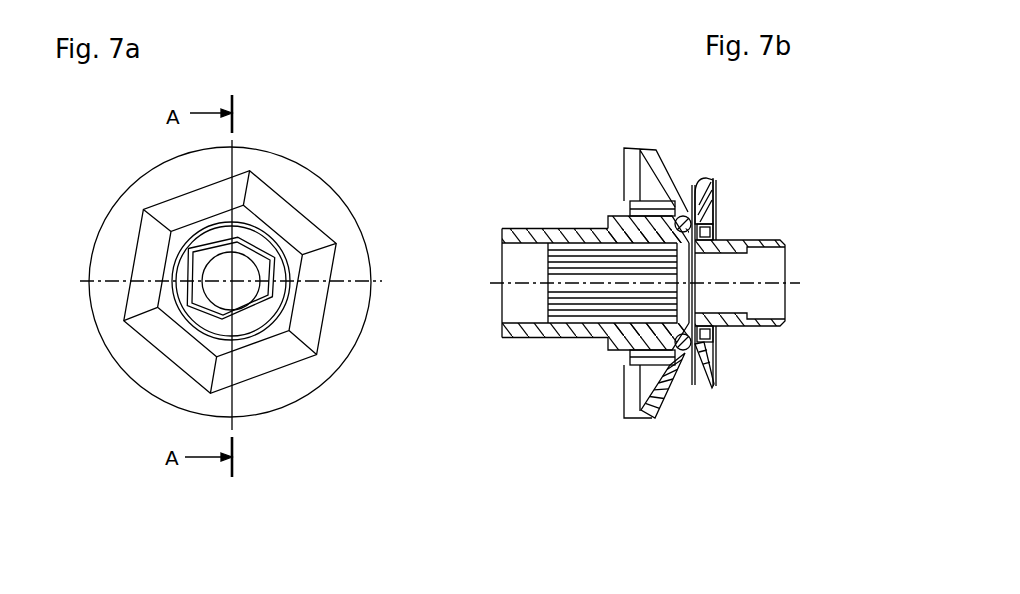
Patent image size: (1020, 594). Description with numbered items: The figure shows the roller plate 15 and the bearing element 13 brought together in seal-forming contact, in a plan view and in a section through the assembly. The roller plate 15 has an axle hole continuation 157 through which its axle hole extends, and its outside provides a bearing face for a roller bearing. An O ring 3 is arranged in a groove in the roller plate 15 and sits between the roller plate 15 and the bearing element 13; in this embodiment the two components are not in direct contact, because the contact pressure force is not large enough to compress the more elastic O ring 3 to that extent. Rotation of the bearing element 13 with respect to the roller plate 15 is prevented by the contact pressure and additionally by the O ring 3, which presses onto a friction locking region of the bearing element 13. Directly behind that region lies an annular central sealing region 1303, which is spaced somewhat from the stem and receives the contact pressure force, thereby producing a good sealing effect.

In FIG. 7a, the roller plate 15 is at (170, 393).
In FIG. 7b, the roller plate 15 is at (585, 368).
In FIG. 7a, the bearing element 13 is at (282, 358).
In FIG. 7b, the bearing element 13 is at (758, 347).
In FIG. 7b, the axle hole continuation 157 is at (548, 338).
In FIG. 7b, the O ring 3 is at (676, 362).
In FIG. 7b, the annular central sealing region 1303 is at (716, 214).